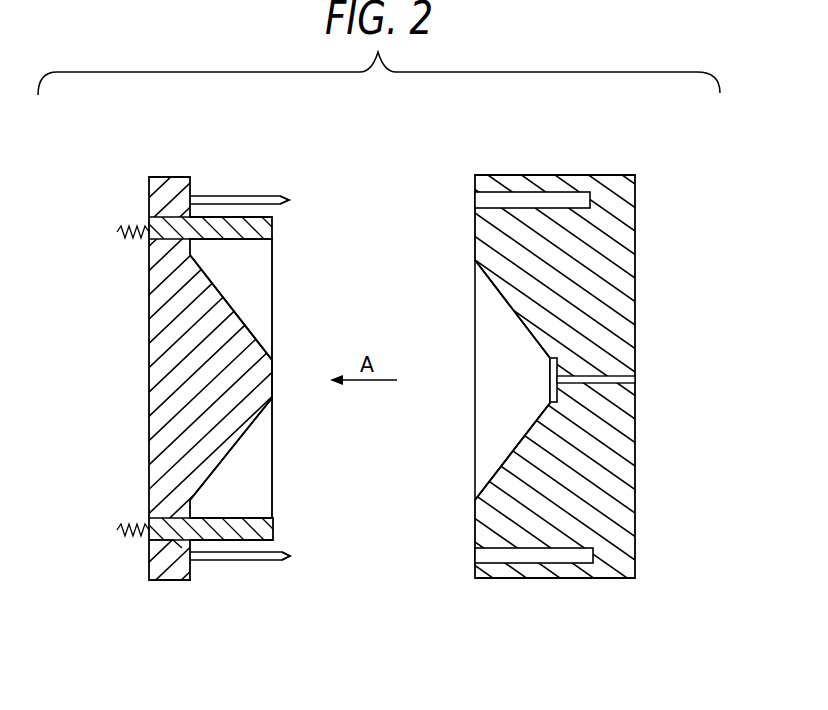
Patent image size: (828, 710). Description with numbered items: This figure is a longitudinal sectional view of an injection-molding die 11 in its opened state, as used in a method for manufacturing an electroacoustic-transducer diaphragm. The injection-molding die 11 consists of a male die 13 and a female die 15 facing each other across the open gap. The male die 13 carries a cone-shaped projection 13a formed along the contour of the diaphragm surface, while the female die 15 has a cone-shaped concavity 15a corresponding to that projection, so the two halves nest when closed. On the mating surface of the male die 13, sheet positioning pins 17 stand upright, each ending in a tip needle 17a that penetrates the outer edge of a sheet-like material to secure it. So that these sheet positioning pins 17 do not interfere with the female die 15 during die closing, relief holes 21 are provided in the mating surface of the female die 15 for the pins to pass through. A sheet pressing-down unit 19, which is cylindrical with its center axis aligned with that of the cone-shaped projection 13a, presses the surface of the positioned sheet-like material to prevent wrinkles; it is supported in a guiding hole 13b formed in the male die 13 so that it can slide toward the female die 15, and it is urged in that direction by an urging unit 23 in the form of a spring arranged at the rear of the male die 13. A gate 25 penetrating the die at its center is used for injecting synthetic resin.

The injection-molding die 11 is at (646, 157).
The male die part 13 is at (200, 334).
The cone-shaped projection 13a is at (246, 432).
The guiding hole 13b is at (182, 541).
The female die part 15 is at (554, 375).
The cone-shaped concavity 15a is at (540, 414).
The sheet positioning pin 17 is at (259, 379).
The tip needle 17a is at (286, 199).
The sheet pressing-down unit 19 is at (266, 509).
The relief hole 21 is at (535, 197).
The urging unit 23 is at (117, 232).
The gate 25 is at (636, 380).